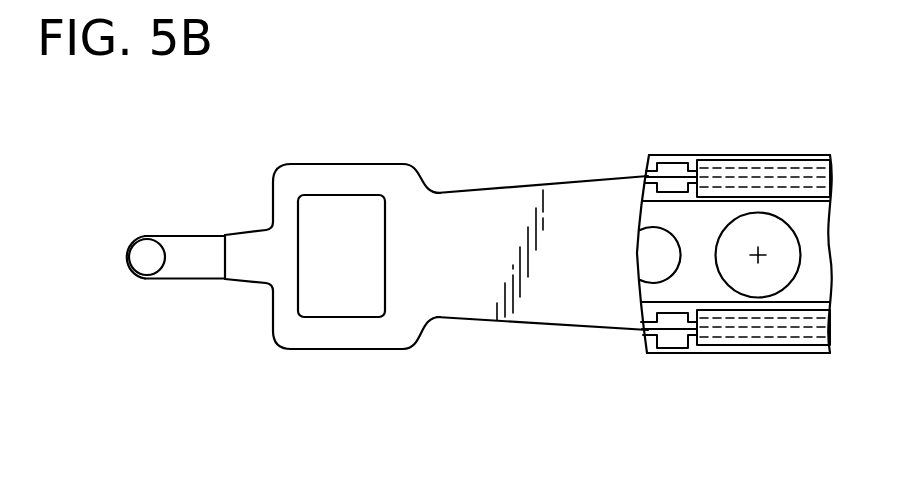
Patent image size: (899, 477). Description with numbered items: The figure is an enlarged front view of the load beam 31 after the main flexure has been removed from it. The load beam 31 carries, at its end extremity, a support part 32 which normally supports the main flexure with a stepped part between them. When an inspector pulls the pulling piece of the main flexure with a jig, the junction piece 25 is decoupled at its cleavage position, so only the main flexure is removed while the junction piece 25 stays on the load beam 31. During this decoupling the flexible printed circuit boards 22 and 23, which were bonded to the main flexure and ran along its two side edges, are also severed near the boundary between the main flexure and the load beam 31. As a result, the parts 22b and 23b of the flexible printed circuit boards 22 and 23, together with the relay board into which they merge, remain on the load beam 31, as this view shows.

The support part 32 is at (502, 226).
The load beam 31 is at (700, 268).
The junction piece 25 is at (652, 252).
The flexible printed circuit board 22 is at (767, 175).
The part of the flexible printed circuit board 22b is at (668, 155).
The flexible printed circuit board 23 is at (797, 315).
The part of the flexible printed circuit board 23b is at (659, 356).